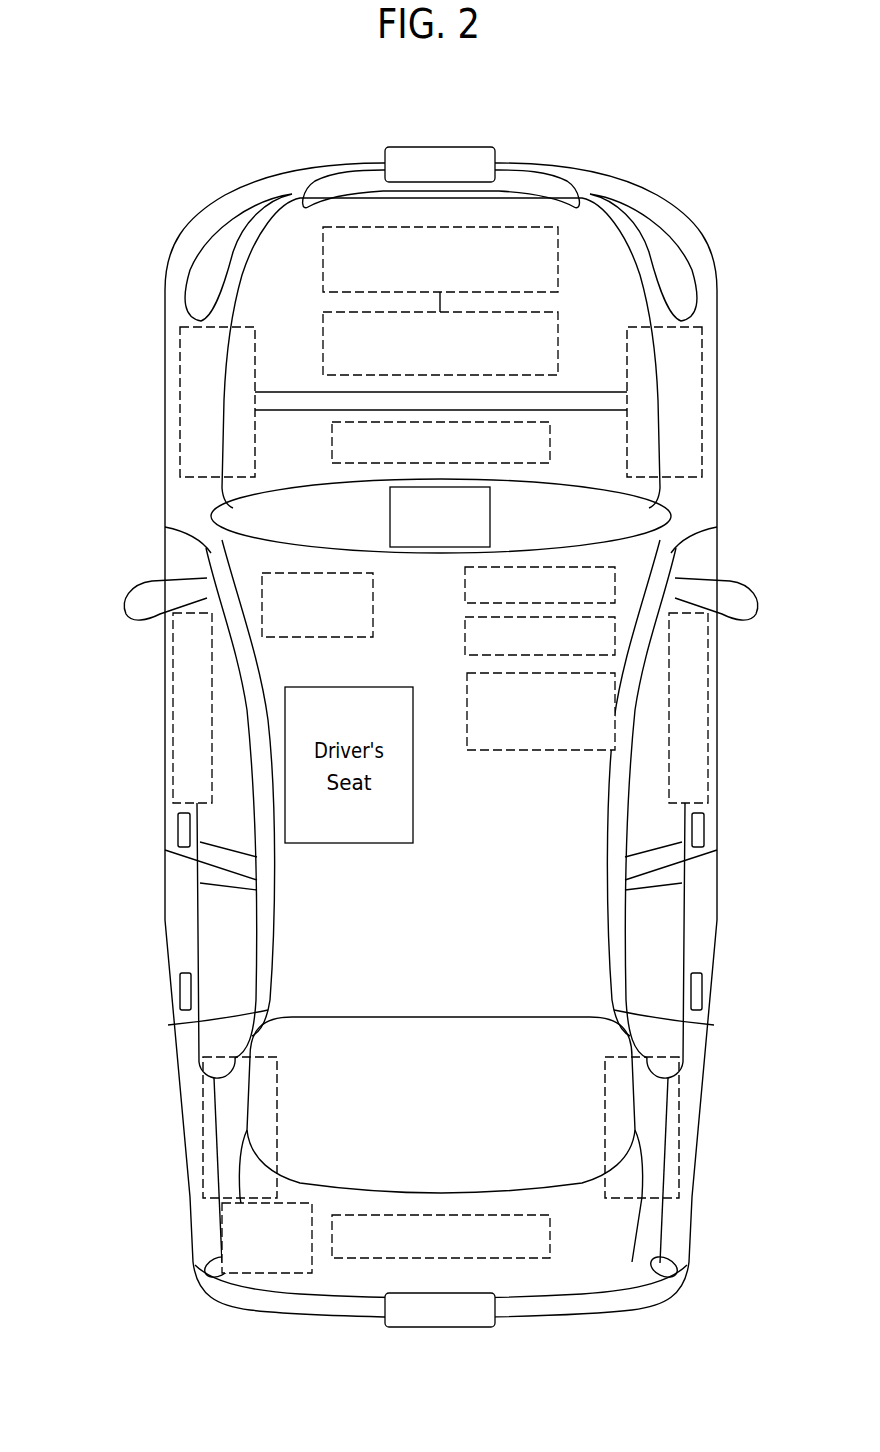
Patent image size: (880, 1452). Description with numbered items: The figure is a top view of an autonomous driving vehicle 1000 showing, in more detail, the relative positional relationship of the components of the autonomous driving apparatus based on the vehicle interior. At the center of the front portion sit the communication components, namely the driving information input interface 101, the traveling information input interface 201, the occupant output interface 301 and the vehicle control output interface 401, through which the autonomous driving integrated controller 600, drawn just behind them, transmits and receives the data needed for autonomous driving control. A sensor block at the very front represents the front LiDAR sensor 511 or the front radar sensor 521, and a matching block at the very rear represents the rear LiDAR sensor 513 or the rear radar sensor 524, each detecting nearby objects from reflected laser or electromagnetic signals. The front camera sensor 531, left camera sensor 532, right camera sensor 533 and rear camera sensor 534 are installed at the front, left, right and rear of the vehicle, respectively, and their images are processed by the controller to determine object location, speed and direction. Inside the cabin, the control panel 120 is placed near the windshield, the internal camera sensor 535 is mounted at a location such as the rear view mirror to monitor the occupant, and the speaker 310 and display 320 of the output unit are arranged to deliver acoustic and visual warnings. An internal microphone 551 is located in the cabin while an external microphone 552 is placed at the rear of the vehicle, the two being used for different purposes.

The autonomous driving vehicle 1000 is at (100, 84).
The driving information input interface 101 is at (530, 203).
The traveling information input interface 201 is at (530, 203).
The occupant output interface 301 is at (530, 203).
The vehicle control output interface 401 is at (558, 247).
The autonomous driving integrated controller 600 is at (558, 345).
The front LiDAR sensor 511 is at (440, 137).
The front radar sensor 521 is at (441, 147).
The rear LiDAR sensor 513 is at (440, 1339).
The rear radar sensor 524 is at (440, 1327).
The front camera sensor 531 is at (550, 444).
The left camera sensor 532 is at (173, 713).
The right camera sensor 533 is at (708, 713).
The rear camera sensor 534 is at (550, 1238).
The internal camera sensor 535 is at (262, 600).
The control panel 120 is at (490, 517).
The speaker 310 is at (465, 583).
The display 320 is at (465, 634).
The internal microphone 551 is at (541, 750).
The external microphone 552 is at (222, 1241).